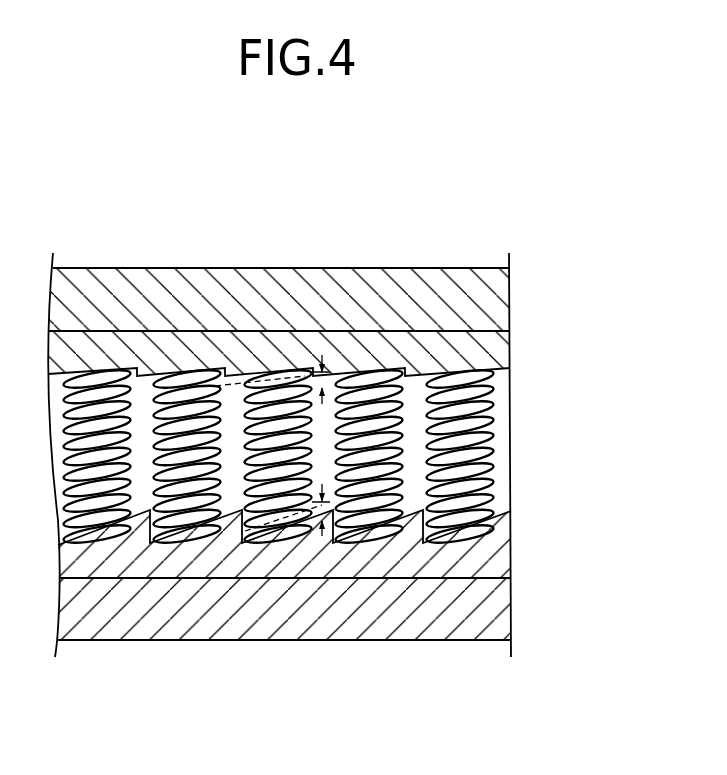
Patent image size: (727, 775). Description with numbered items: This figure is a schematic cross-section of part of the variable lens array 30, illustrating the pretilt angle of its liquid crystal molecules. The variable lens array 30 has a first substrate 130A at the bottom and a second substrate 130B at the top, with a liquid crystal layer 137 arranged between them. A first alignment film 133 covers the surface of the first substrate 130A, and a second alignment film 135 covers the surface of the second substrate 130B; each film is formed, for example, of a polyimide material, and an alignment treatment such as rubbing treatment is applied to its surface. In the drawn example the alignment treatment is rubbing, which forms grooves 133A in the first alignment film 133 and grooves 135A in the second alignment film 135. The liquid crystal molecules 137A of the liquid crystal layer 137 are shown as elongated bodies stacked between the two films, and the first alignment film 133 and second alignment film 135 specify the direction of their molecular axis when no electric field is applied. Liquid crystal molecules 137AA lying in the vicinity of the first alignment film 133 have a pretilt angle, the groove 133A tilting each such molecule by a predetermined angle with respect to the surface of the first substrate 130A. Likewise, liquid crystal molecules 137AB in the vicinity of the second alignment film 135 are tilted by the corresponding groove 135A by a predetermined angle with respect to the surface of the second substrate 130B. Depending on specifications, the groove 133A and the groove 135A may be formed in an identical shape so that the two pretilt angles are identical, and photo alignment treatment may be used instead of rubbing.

The variable lens array 30 is at (491, 195).
The first substrate 130A is at (507, 603).
The second substrate 130B is at (487, 302).
The first alignment film 133 is at (319, 606).
The groove 133A is at (252, 535).
The second alignment film 135 is at (314, 282).
The groove 135A is at (302, 375).
The liquid crystal layer 137 is at (330, 481).
The liquid crystal molecules 137A is at (487, 413).
The liquid crystal molecules 137AA is at (288, 518).
The liquid crystal molecules 137AB is at (302, 378).